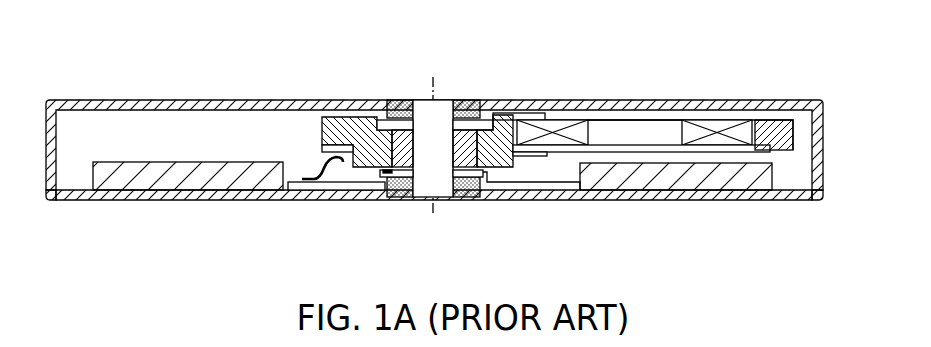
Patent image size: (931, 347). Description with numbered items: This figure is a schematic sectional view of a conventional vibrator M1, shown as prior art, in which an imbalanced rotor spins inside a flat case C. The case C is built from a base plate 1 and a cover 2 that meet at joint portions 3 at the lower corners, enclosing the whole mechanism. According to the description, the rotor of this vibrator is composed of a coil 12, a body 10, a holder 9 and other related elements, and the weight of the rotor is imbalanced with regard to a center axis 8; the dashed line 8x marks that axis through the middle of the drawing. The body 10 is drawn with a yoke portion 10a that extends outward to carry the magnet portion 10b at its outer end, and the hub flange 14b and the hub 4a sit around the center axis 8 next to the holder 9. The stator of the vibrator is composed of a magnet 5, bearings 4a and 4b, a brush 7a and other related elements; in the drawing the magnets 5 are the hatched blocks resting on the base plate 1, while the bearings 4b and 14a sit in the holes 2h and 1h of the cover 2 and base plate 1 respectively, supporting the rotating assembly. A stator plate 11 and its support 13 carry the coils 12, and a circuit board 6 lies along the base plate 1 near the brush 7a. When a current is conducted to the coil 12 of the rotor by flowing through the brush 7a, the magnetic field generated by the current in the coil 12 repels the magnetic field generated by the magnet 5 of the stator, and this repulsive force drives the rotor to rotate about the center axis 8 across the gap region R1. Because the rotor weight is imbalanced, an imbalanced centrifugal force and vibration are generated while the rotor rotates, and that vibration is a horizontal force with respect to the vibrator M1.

The motor M1 is at (152, 78).
The case C is at (221, 98).
The base plate 1 is at (118, 193).
The cover 2 is at (83, 103).
The joint portion 3 is at (52, 193).
The magnet 5 is at (193, 180).
The circuit board 6 is at (568, 187).
The brush 7a is at (328, 183).
The center axis 8 is at (422, 107).
The shaft axis 8x is at (437, 88).
The upper bearing hole / bearing 2h is at (388, 108).
The bearing 4b is at (470, 105).
The lower bearing hole / bearing 1h is at (390, 197).
The lower bearing 14a is at (468, 197).
The bearing 4a is at (407, 197).
The holder 9 is at (377, 170).
The body 10 is at (316, 135).
The rotor yoke 10a is at (350, 140).
The rotor magnet 10b is at (788, 123).
The hub flange 14b is at (495, 117).
The coil 12 is at (577, 130).
The rotor region / gap R1 is at (644, 112).
The stator plate 11 is at (670, 148).
The stator support 13 is at (530, 156).